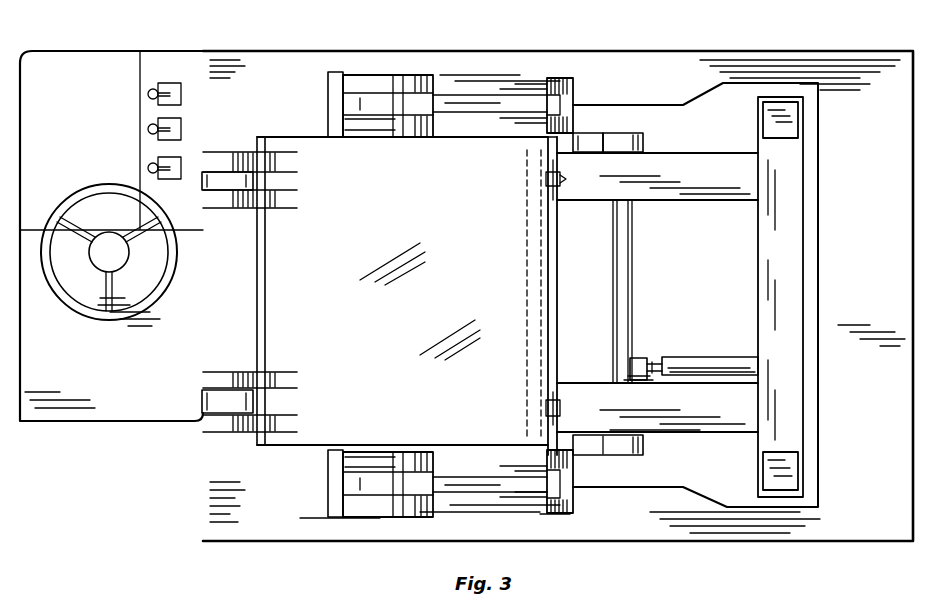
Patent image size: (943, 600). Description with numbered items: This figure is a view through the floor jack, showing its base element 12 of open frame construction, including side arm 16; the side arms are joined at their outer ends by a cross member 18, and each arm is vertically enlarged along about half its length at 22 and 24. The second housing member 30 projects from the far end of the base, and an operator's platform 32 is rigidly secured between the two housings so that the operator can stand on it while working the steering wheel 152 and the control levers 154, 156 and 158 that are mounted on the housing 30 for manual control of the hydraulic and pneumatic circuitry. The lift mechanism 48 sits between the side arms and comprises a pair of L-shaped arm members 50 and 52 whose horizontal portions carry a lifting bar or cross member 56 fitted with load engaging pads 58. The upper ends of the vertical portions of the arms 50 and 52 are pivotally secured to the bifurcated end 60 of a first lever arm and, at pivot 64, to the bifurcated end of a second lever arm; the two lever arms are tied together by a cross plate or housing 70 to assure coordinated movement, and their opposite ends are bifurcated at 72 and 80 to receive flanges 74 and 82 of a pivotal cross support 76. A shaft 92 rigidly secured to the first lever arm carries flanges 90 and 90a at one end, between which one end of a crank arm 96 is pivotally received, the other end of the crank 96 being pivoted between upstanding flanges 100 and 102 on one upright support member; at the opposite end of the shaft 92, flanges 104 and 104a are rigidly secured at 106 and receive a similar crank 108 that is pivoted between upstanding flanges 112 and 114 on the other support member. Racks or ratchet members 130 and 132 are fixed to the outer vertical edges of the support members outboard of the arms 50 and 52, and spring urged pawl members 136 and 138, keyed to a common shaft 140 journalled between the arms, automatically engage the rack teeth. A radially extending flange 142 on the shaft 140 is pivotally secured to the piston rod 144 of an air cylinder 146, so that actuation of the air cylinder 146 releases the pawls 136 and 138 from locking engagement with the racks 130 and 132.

The base element 12 is at (863, 510).
The side arm 16 is at (731, 62).
The cross member 18 is at (880, 288).
The vertically enlarged portion 22 is at (403, 526).
The vertically enlarged portion 24 is at (470, 60).
The second housing member 30 is at (192, 61).
The operator's platform 32 is at (60, 136).
The lift mechanism 48 is at (709, 186).
The L-shaped arm member 50 is at (717, 420).
The L-shaped arm member 52 is at (665, 172).
The lifting bar 56 is at (790, 250).
The load engaging pad 58 is at (795, 126).
The bifurcated end 60 is at (562, 406).
The pivot connection 64 is at (567, 186).
The cross plate 70 is at (392, 358).
The bifurcated end 72 is at (228, 381).
The flange 74 is at (228, 403).
The pivotal cross support 76 is at (216, 336).
The bifurcated end 80 is at (229, 157).
The flange 82 is at (226, 184).
The flange member 90 is at (350, 505).
The flange 90a is at (350, 460).
The shaft 92 is at (350, 520).
The crank arm 96 is at (462, 480).
The upstanding flange 100 is at (554, 514).
The upstanding flange 102 is at (530, 462).
The flange 104 is at (388, 82).
The flange 104a is at (382, 126).
The rigid securement 106 is at (352, 76).
The crank 108 is at (465, 106).
The upstanding flange 112 is at (552, 77).
The upstanding flange 114 is at (522, 132).
The rack member 130 is at (585, 450).
The rack member 132 is at (588, 138).
The spring urged pawl member 136 is at (640, 447).
The spring urged pawl member 138 is at (616, 138).
The common shaft 140 is at (624, 247).
The radially extending flange 142 is at (630, 376).
The piston rod 144 is at (655, 360).
The air cylinder 146 is at (720, 360).
The steering wheel 152 is at (88, 318).
The control lever 154 is at (150, 91).
The control lever 156 is at (150, 127).
The control lever 158 is at (150, 165).